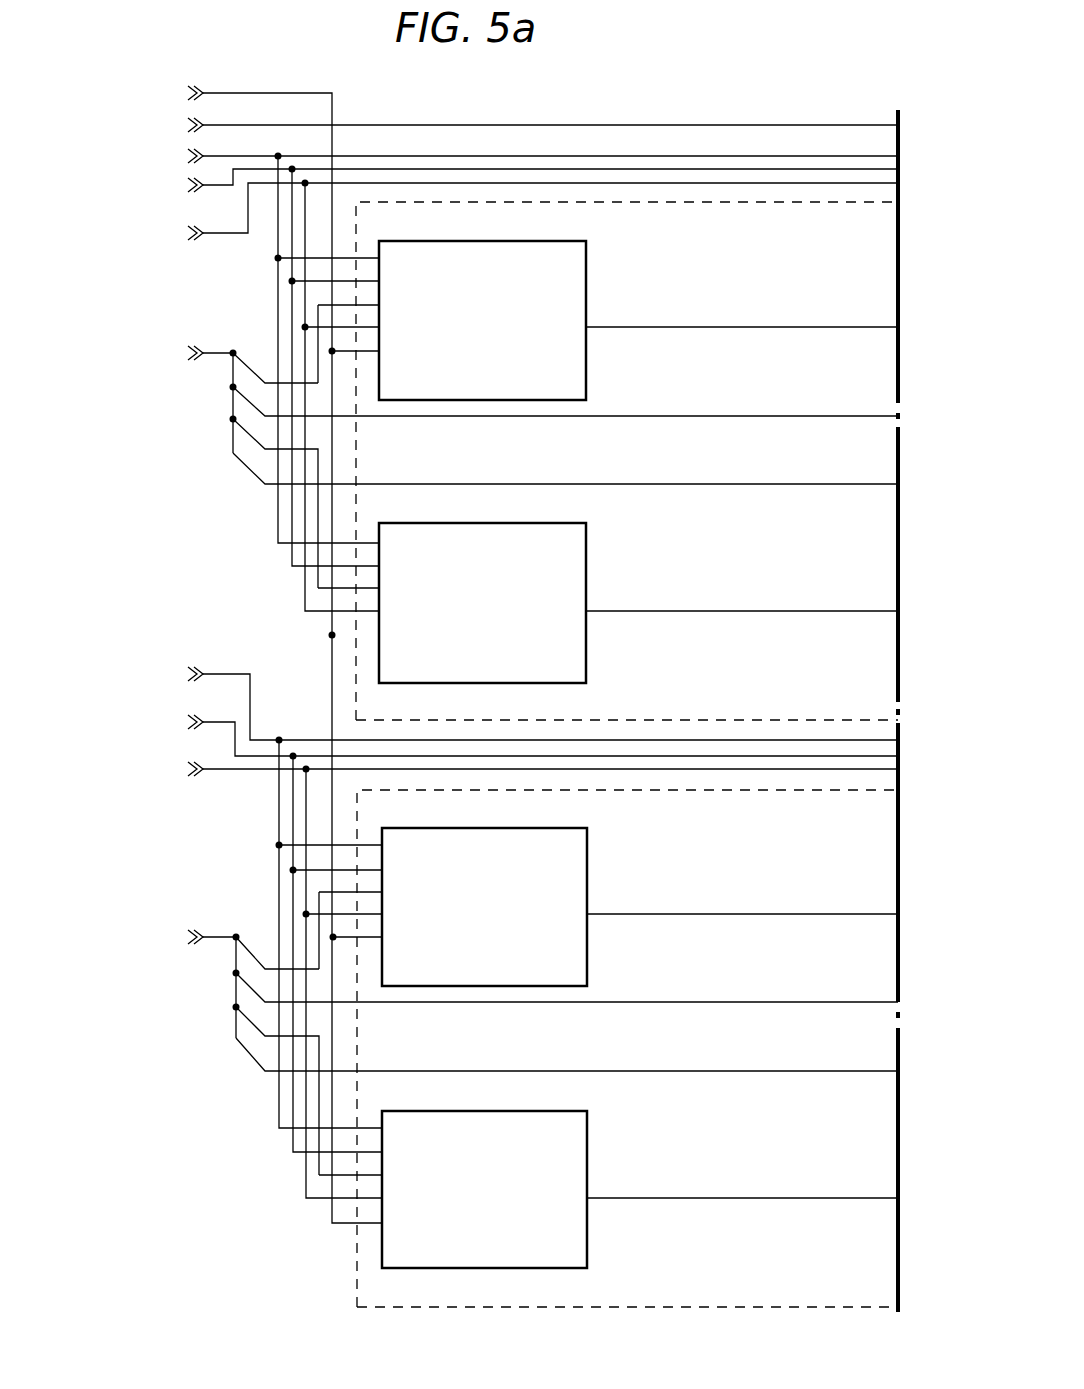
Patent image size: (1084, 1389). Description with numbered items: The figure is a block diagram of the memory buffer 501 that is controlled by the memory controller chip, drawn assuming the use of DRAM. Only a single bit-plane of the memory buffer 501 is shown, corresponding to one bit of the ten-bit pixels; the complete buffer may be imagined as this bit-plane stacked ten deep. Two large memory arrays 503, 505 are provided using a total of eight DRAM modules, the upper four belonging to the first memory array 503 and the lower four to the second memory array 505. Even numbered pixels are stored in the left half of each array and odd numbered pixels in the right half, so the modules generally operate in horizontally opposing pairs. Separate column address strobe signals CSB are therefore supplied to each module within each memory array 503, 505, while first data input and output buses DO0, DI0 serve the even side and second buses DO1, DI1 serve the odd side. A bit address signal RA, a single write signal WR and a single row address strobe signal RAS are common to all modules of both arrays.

The memory buffer 501 is at (781, 92).
The first memory array 503 is at (356, 692).
The second memory array 505 is at (357, 1275).